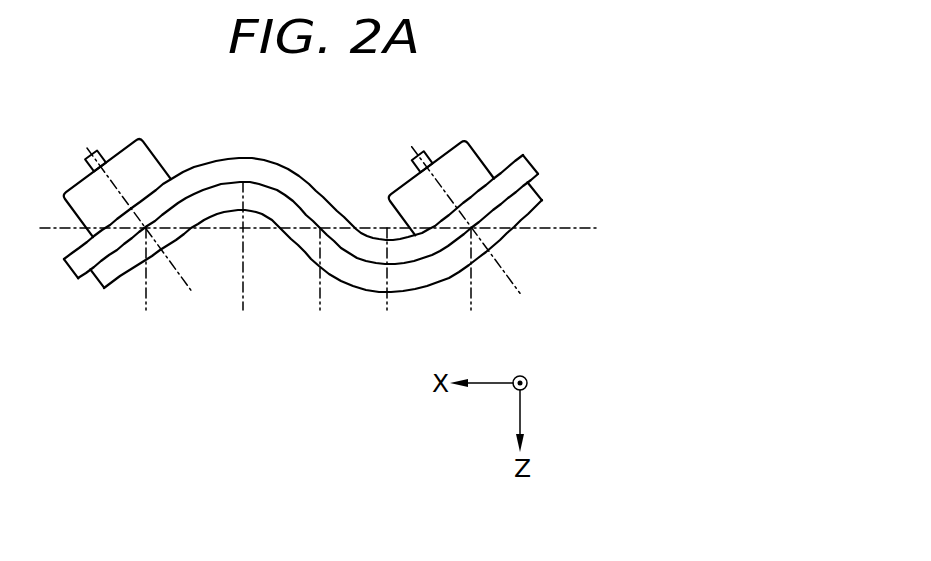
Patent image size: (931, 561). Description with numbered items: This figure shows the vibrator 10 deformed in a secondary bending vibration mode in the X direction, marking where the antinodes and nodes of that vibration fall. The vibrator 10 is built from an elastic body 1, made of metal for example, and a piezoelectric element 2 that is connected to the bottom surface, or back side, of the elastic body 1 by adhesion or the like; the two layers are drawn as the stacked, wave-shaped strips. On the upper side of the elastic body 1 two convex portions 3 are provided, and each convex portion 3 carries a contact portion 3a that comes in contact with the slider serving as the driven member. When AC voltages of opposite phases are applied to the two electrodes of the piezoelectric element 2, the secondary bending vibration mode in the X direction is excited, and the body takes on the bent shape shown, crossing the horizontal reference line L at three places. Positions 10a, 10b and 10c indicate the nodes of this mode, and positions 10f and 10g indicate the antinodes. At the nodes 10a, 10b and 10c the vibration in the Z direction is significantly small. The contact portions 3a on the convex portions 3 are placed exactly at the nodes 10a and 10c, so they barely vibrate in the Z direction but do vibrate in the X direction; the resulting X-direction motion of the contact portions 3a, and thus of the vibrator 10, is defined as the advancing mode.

The elastic body 1 is at (534, 169).
The piezoelectric element 2 is at (333, 223).
The convex portion 3 is at (160, 153).
The contact portion 3a is at (107, 146).
The vibrator 10 is at (344, 206).
The node position 10a is at (140, 245).
The node position 10b is at (319, 285).
The node position 10c is at (466, 245).
The antinode position 10f is at (243, 262).
The antinode position 10g is at (386, 285).
The reference line L is at (329, 228).